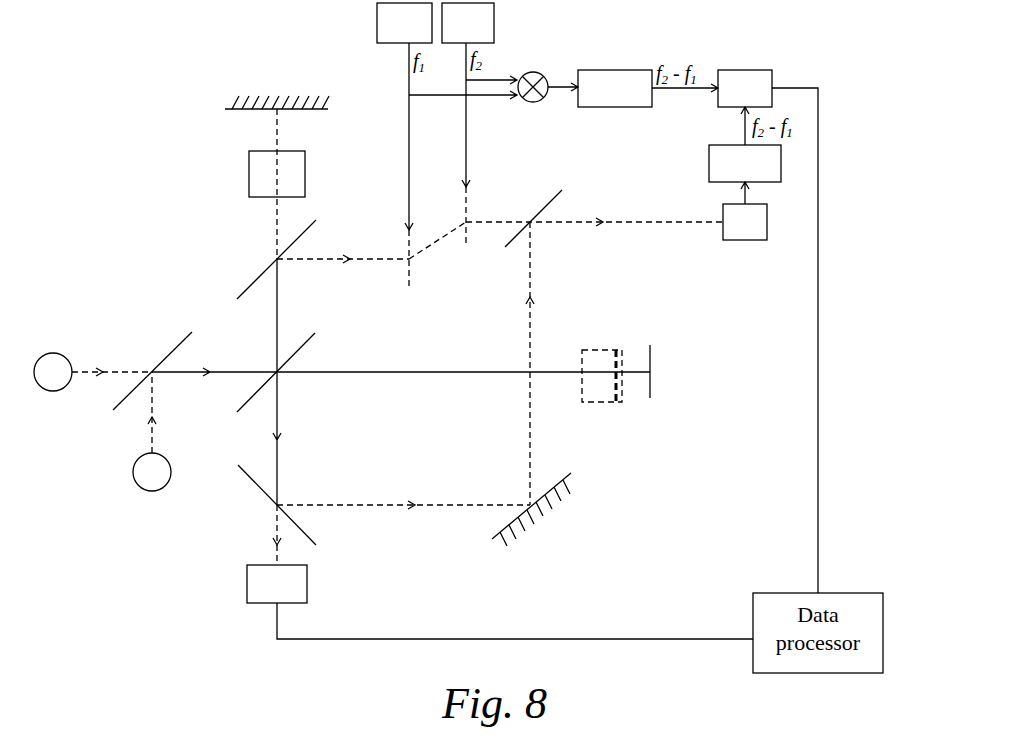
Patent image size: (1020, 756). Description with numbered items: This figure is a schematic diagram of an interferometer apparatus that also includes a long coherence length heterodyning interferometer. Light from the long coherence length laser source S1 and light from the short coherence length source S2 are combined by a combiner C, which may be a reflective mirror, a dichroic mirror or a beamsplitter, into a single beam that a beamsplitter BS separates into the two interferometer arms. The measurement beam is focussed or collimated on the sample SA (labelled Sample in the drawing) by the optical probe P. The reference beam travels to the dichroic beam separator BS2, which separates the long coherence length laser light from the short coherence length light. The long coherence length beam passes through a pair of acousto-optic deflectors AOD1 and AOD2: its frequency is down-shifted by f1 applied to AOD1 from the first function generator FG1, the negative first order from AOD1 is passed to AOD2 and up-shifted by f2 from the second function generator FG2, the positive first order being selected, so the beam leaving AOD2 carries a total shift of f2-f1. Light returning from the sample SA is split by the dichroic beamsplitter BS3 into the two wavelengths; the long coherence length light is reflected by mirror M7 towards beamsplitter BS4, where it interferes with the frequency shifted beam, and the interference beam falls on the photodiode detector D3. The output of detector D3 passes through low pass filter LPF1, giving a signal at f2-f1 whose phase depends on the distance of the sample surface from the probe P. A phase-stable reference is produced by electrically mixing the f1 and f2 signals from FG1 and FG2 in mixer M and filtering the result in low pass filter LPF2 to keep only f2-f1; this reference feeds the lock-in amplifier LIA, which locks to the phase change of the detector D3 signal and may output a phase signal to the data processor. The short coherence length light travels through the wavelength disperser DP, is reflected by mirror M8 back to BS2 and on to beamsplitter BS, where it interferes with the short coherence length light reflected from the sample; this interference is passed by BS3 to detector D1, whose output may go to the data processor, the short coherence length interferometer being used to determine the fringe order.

The first waveform or function generator FG1 is at (404, 116).
The second waveform or function generator FG2 is at (468, 95).
The mixer M is at (533, 72).
The low pass filter LPF2 is at (615, 88).
The lock-in amplifier LIA is at (745, 88).
The low pass filter LPF1 is at (745, 163).
The photodiode detector D3 is at (745, 222).
The mirror M8 is at (295, 104).
The wavelength disperser DP is at (296, 174).
The dichroic beam separator BS2 is at (263, 259).
The beamsplitter BS4 is at (541, 205).
The acousto-optic deflector AOD1 is at (406, 275).
The acousto-optic deflector AOD2 is at (469, 234).
The long coherence length laser source S1 is at (53, 372).
The short coherence length source S2 is at (152, 472).
The combiner C is at (141, 382).
The beamsplitter BS is at (258, 381).
The dichroic beamsplitter BS3 is at (263, 505).
The mirror M7 is at (541, 509).
The detector D1 is at (277, 584).
The optical probe P is at (602, 392).
The sample SA is at (650, 351).
The sample Sample is at (675, 372).